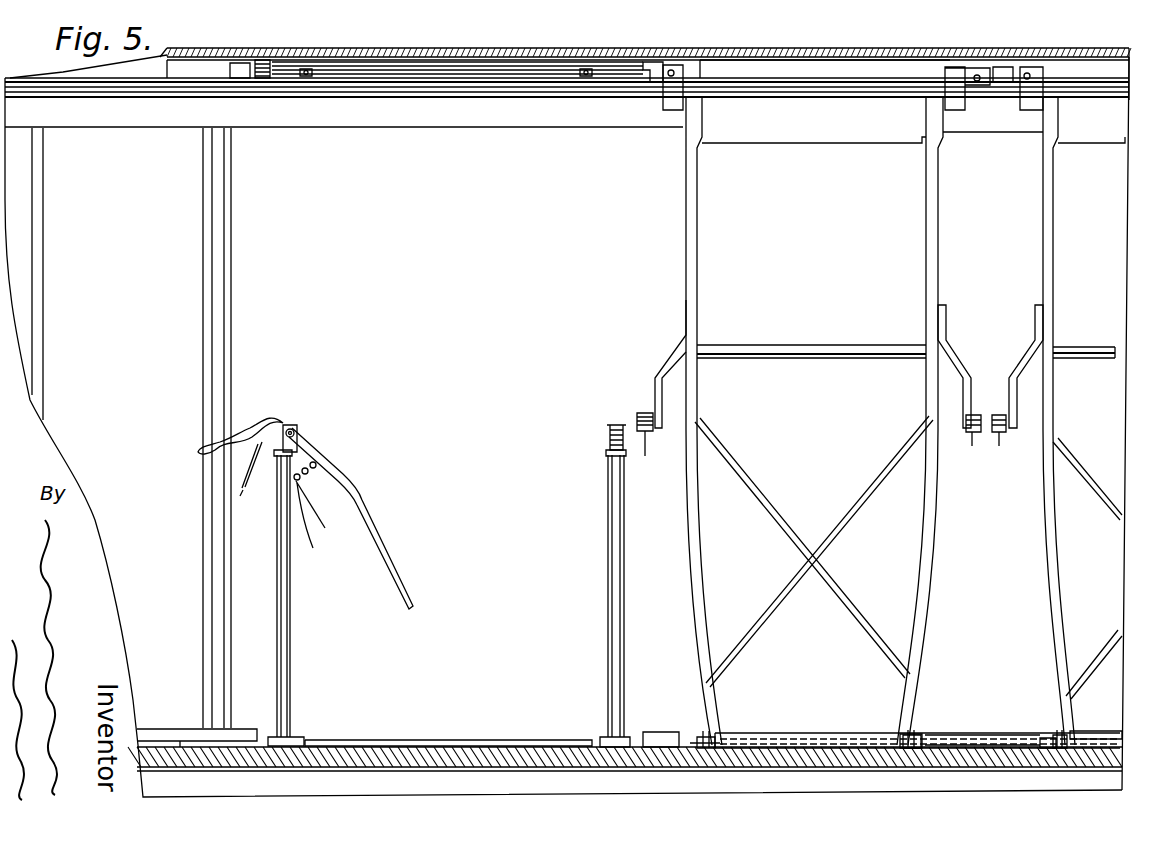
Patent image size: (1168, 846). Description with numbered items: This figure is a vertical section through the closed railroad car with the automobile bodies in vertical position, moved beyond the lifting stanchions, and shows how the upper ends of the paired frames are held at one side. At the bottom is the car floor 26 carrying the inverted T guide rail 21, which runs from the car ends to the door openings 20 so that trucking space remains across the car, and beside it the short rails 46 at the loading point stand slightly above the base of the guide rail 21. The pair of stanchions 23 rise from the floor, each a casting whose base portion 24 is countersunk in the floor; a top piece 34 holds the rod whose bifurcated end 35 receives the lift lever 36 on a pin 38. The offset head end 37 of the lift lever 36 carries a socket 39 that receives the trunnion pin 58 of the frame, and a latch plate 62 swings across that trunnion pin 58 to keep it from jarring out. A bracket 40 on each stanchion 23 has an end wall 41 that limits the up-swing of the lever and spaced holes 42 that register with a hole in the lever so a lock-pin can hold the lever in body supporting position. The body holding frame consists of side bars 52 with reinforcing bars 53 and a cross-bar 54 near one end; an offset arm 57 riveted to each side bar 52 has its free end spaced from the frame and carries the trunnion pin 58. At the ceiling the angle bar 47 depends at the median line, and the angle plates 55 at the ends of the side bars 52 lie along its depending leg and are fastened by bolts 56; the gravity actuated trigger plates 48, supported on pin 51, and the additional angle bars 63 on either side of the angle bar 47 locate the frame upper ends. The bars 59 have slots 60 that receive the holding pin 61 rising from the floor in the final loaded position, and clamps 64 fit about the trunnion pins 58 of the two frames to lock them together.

The door opening 20 is at (236, 301).
The guide rail 21 is at (172, 718).
The stanchion 23 is at (299, 622).
The base portion 24 is at (300, 737).
The car floor 26 is at (442, 726).
The top piece 34 is at (300, 452).
The bifurcated end 35 is at (609, 438).
The lift lever 36 is at (358, 495).
The head end 37 is at (616, 425).
The pin 38 is at (298, 428).
The socket 39 is at (243, 505).
The bracket 40 is at (318, 529).
The end wall 41 is at (316, 466).
The spaced holes 42 is at (322, 516).
The short rail 46 is at (490, 740).
The angle bar 47 is at (262, 60).
The trigger plate 48 is at (440, 62).
The pin 51 is at (312, 68).
The side bar 52 is at (678, 258).
The reinforcing bar 53 is at (795, 547).
The cross-bar 54 is at (757, 146).
The angle plate 55 is at (666, 106).
The bolt 56 is at (655, 62).
The offset arm 57 is at (668, 360).
The trunnion pin 58 is at (637, 418).
The bar 59 is at (1133, 745).
The slot 60 is at (1042, 738).
The holding pin 61 is at (695, 735).
The latch plate 62 is at (252, 412).
The angle bar 63 is at (187, 67).
The clamp 64 is at (985, 406).